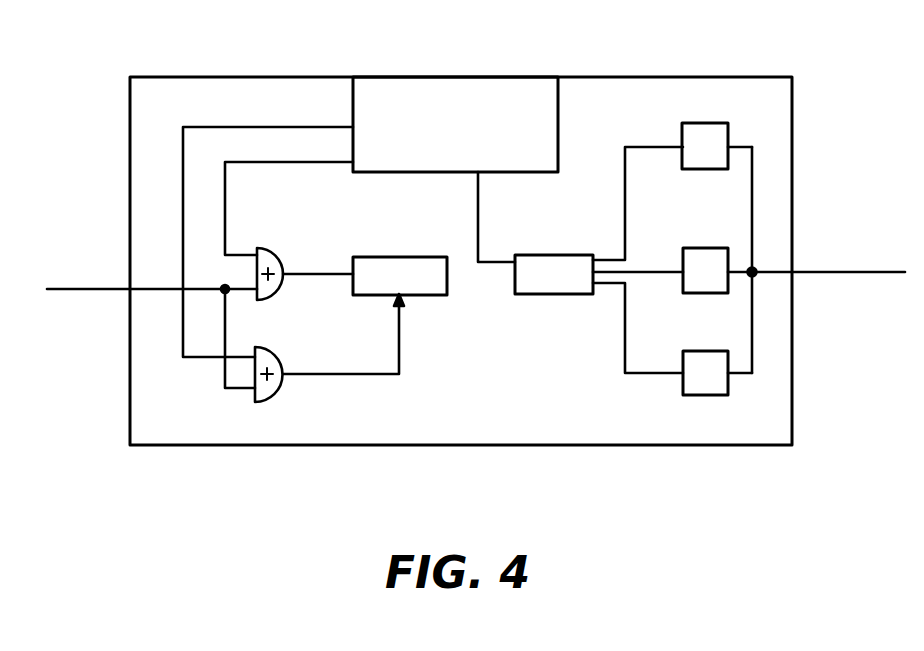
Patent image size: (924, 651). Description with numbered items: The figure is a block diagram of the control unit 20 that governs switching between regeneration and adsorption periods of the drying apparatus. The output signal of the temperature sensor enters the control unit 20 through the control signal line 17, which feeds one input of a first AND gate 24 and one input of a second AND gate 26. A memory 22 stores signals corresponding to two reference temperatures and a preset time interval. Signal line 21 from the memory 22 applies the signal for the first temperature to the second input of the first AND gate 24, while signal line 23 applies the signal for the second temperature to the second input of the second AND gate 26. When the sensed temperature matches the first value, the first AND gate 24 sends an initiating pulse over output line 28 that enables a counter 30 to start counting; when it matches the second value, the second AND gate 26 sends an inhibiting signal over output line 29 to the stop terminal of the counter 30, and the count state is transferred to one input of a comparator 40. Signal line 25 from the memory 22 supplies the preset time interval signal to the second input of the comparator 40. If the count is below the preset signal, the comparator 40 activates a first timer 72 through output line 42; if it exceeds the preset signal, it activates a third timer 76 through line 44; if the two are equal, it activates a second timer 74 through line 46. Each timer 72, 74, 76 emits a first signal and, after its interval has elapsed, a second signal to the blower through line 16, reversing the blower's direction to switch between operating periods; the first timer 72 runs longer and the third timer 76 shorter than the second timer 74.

The control unit 20 is at (826, 127).
The memory 22 is at (436, 82).
The signal line 21 is at (225, 162).
The signal line 23 is at (197, 358).
The control signal line 17 is at (84, 290).
The first AND gate 24 is at (275, 249).
The second AND gate 26 is at (277, 394).
The output line 28 is at (337, 275).
The counter 30 is at (378, 256).
The output line 29 is at (372, 374).
The signal line 25 is at (478, 212).
The comparator 40 is at (553, 254).
The output line 42 is at (644, 144).
The line 44 is at (652, 373).
The line 46 is at (620, 285).
The first timer 72 is at (718, 134).
The second timer 74 is at (692, 287).
The third timer 76 is at (720, 390).
The line 16 is at (838, 274).